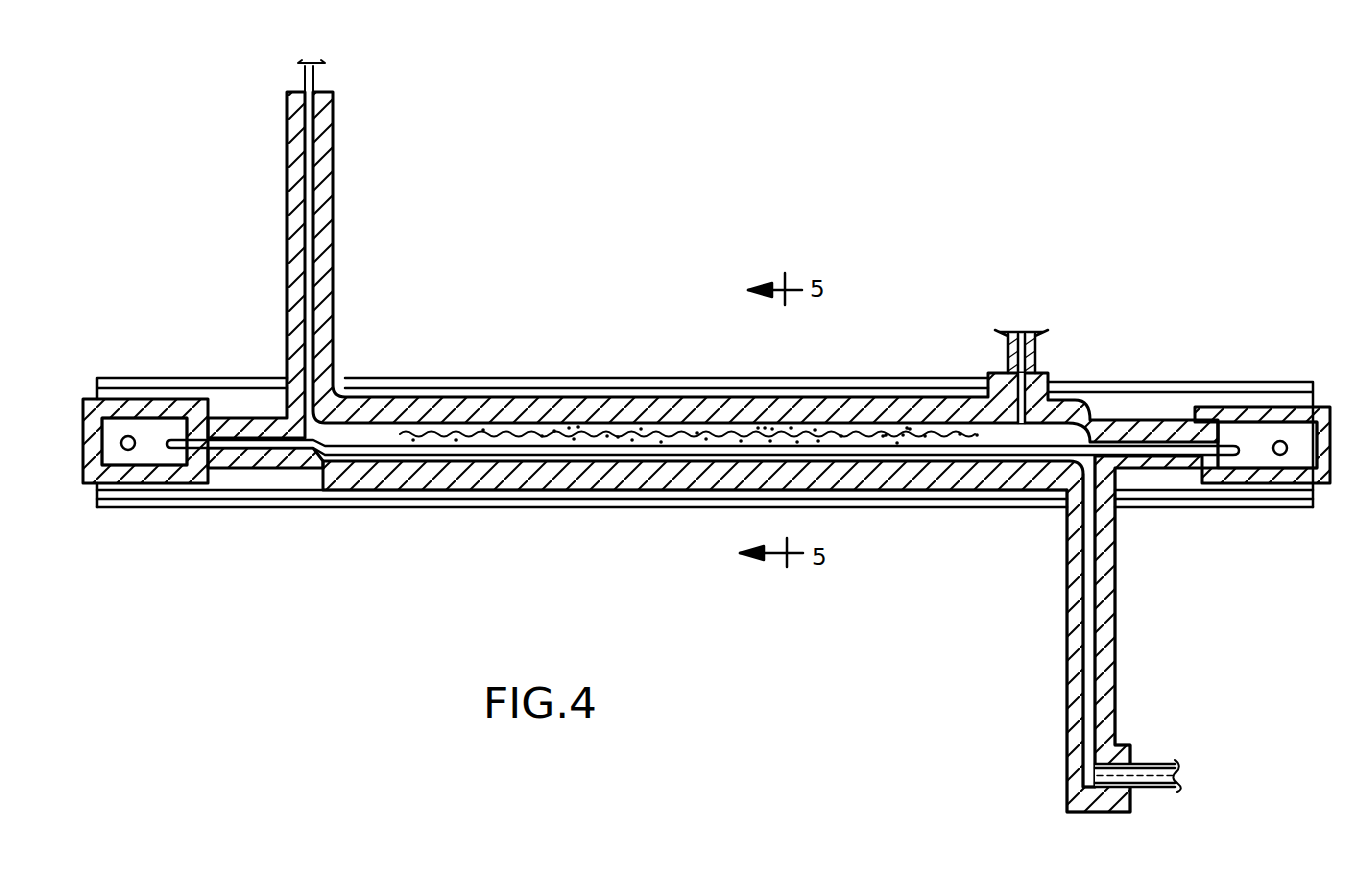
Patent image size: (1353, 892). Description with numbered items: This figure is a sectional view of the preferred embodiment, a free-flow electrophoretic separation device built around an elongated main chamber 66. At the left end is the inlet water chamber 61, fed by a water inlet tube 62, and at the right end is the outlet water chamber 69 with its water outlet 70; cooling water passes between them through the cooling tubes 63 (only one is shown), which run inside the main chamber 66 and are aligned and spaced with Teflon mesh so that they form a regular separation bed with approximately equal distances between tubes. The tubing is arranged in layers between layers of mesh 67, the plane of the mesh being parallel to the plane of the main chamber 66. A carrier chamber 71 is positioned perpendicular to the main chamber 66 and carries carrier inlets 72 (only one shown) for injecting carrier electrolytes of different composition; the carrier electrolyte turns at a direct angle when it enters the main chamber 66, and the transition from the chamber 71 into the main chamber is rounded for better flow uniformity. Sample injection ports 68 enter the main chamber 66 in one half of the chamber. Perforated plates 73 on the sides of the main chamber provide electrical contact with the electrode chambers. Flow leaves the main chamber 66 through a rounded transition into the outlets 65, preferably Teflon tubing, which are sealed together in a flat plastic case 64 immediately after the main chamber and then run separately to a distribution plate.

The inlet water chamber 61 is at (113, 427).
The water inlet tube 62 is at (128, 436).
The cooling tubes 63 is at (173, 415).
The flat plastic case 64 is at (333, 202).
The outlets 65 is at (313, 75).
The main chamber 66 is at (460, 423).
The mesh layers 67 is at (540, 428).
The sample injection ports 68 is at (1008, 348).
The outlet water chamber 69 is at (1258, 432).
The water outlet 70 is at (1304, 408).
The carrier chamber 71 is at (1093, 657).
The carrier inlets 72 is at (1140, 760).
The perforated plates 73 is at (935, 488).